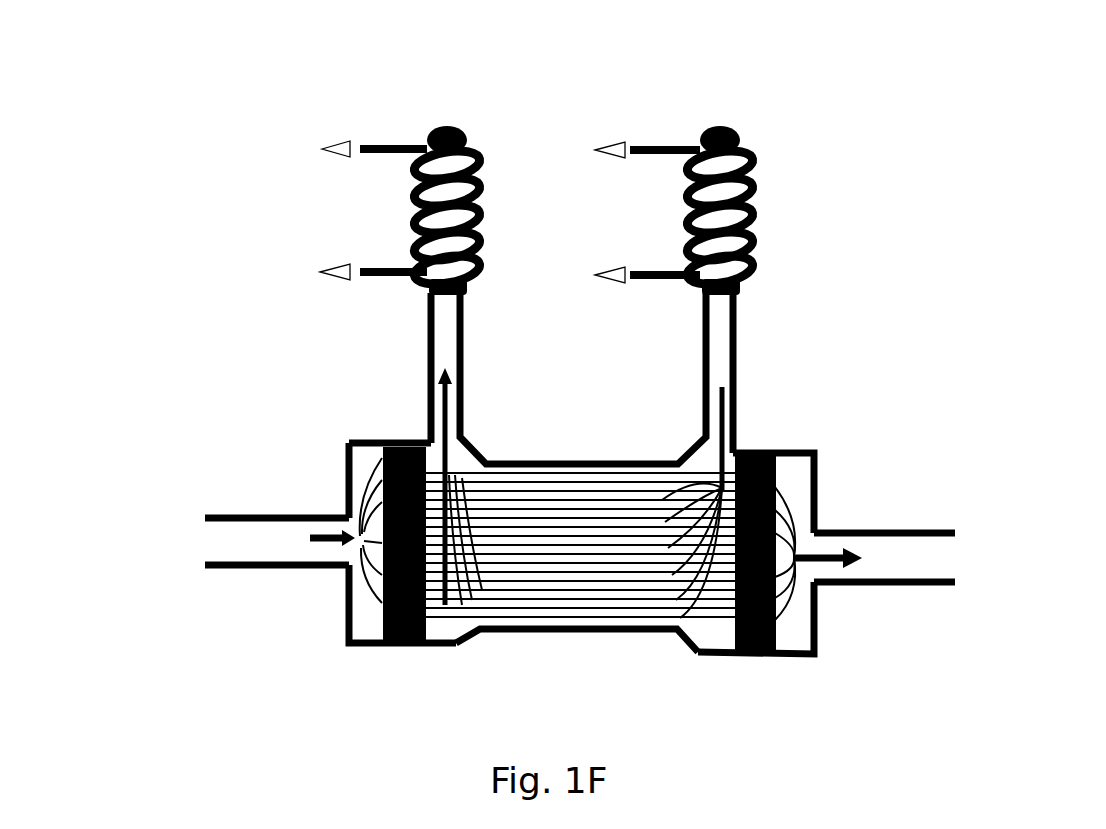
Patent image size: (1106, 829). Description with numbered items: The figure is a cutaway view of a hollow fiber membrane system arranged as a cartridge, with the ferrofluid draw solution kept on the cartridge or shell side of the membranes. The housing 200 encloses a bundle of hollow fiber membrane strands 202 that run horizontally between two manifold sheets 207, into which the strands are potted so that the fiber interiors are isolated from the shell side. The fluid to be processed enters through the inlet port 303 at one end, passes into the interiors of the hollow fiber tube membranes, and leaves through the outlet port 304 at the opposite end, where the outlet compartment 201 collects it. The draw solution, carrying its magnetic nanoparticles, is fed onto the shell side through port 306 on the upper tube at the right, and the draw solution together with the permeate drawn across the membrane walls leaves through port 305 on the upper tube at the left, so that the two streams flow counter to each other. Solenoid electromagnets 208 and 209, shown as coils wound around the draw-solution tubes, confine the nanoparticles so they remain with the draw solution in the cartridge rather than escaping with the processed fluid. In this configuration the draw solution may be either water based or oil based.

The housing 200 is at (342, 442).
The outlet compartment 201 is at (803, 466).
The hollow fiber membrane strands 202 is at (522, 545).
The manifold sheets 207 is at (447, 647).
The solenoid electromagnet 208 is at (318, 265).
The solenoid electromagnet 209 is at (605, 260).
The port 303 is at (198, 542).
The port 304 is at (958, 560).
The port 305 is at (458, 122).
The port 306 is at (727, 125).